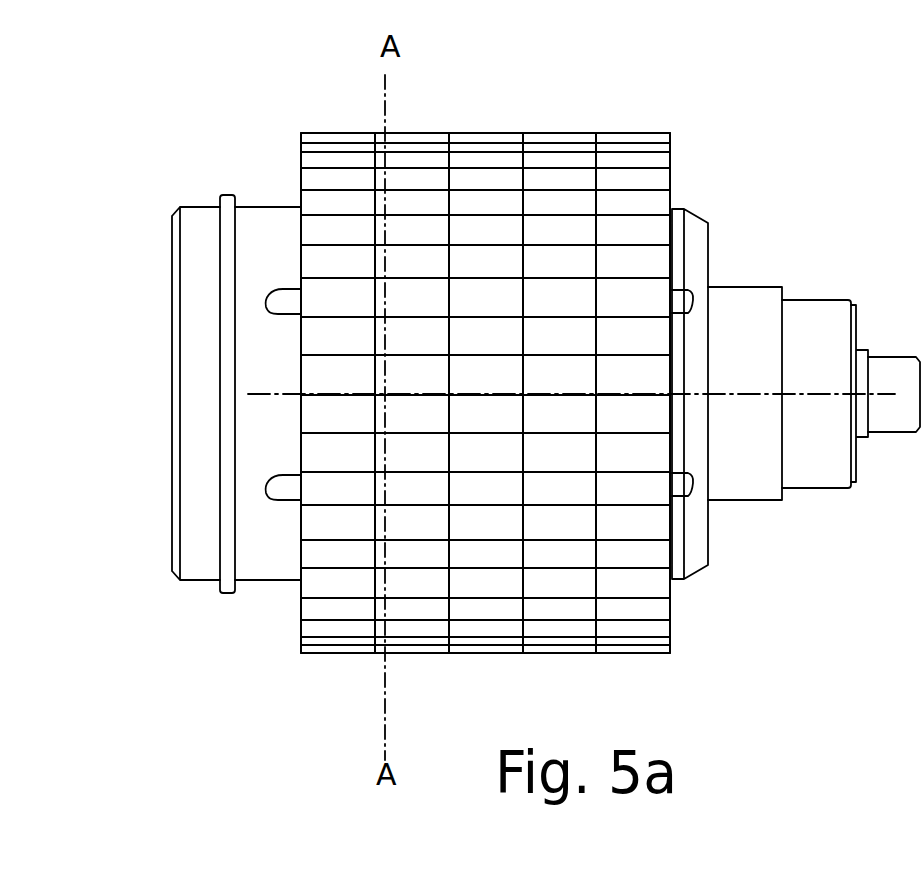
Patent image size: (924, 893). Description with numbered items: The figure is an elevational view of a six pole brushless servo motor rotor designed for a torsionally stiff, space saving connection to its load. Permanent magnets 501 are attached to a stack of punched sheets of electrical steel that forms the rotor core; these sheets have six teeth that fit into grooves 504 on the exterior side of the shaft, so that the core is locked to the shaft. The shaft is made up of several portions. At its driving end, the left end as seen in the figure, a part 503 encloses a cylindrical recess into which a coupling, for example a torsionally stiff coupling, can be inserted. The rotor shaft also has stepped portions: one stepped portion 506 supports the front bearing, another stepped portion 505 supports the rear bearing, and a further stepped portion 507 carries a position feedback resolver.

The permanent magnet 501 is at (400, 203).
The shaft driving end part 503 is at (695, 246).
The groove 504 is at (678, 483).
The rear bearing stepped portion 505 is at (817, 487).
The front bearing stepped portion 506 is at (200, 580).
The position feedback resolver stepped portion 507 is at (893, 435).